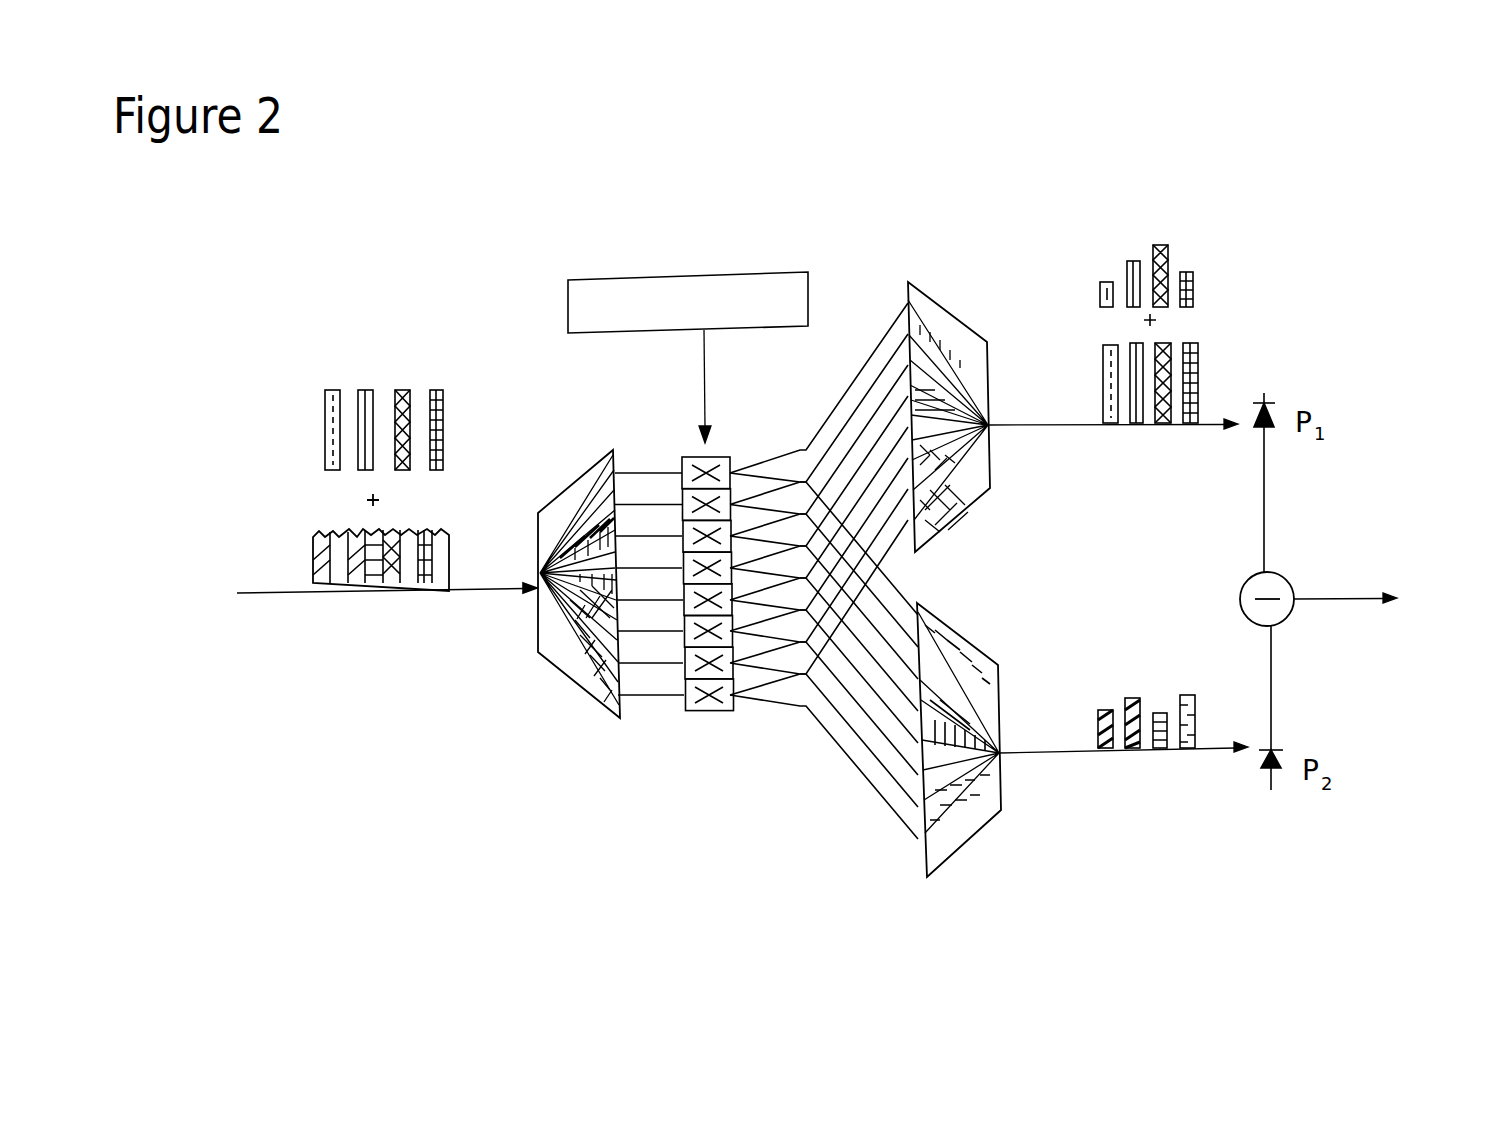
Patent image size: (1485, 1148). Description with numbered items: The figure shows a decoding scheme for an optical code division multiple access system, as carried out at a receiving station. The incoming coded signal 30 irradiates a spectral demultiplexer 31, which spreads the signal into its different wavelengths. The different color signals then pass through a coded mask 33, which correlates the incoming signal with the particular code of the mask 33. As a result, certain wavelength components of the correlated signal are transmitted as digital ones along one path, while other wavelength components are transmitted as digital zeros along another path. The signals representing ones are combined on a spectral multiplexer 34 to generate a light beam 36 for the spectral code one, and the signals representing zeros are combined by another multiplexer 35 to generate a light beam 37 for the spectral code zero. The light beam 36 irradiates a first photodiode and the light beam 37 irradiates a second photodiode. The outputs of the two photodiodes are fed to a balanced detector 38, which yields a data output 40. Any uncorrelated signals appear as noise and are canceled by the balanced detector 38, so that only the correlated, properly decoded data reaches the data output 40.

The coded signal 30 is at (387, 491).
The spectral demultiplexer 31 is at (557, 675).
The coded mask 33 is at (718, 716).
The spectral multiplexer 34 is at (943, 295).
The multiplexer 35 is at (955, 853).
The light beam 36 is at (1128, 334).
The light beam 37 is at (1146, 698).
The balanced detector 38 is at (1282, 586).
The data output 40 is at (1370, 600).